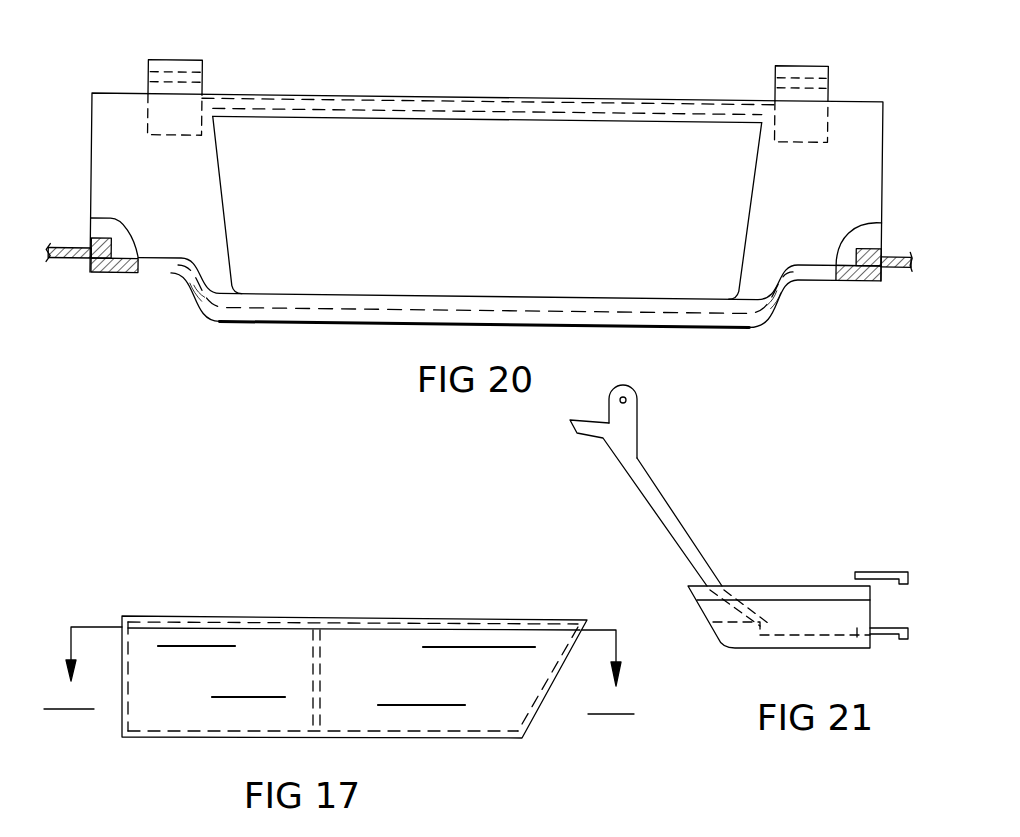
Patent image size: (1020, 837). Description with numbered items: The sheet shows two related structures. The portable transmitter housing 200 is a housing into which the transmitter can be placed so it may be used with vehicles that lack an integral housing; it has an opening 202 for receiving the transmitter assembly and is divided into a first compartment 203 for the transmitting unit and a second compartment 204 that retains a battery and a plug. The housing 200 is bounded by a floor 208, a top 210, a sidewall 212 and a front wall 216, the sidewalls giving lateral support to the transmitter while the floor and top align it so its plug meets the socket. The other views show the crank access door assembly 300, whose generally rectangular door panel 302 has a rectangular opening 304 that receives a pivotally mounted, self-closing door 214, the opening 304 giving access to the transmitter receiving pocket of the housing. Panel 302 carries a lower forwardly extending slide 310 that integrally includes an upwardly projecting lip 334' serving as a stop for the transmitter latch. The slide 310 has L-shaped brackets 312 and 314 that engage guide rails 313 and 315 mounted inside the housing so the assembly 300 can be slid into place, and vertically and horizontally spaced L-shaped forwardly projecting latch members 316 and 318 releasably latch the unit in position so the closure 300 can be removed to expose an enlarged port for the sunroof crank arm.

In FIG. 20, the crank access door assembly 300 is at (498, 88).
In FIG. 20, the door panel 302 is at (861, 108).
In FIG. 21, the door panel 302 is at (660, 490).
In FIG. 20, the rectangular opening 304 is at (752, 192).
In FIG. 20, the slide 310 is at (258, 327).
In FIG. 21, the slide 310 is at (772, 656).
In FIG. 20, the L-shaped bracket 312 is at (112, 228).
In FIG. 20, the guide rail 313 is at (73, 262).
In FIG. 20, the L-shaped bracket 314 is at (870, 243).
In FIG. 20, the guide rail 315 is at (898, 272).
In FIG. 20, the latch member 316 is at (172, 70).
In FIG. 21, the latch member 316 is at (885, 575).
In FIG. 21, the latch member 318 is at (888, 633).
In FIG. 20, the door 214 is at (470, 233).
In FIG. 21, the lip 334' is at (790, 615).
In FIG. 17, the portable transmitter housing 200 is at (205, 606).
In FIG. 17, the opening 202 is at (556, 697).
In FIG. 17, the first compartment 203 is at (487, 688).
In FIG. 17, the second compartment 204 is at (218, 688).
In FIG. 17, the floor 208 is at (477, 738).
In FIG. 17, the top 210 is at (396, 621).
In FIG. 17, the sidewall 212 is at (370, 688).
In FIG. 17, the front wall 216 is at (121, 720).